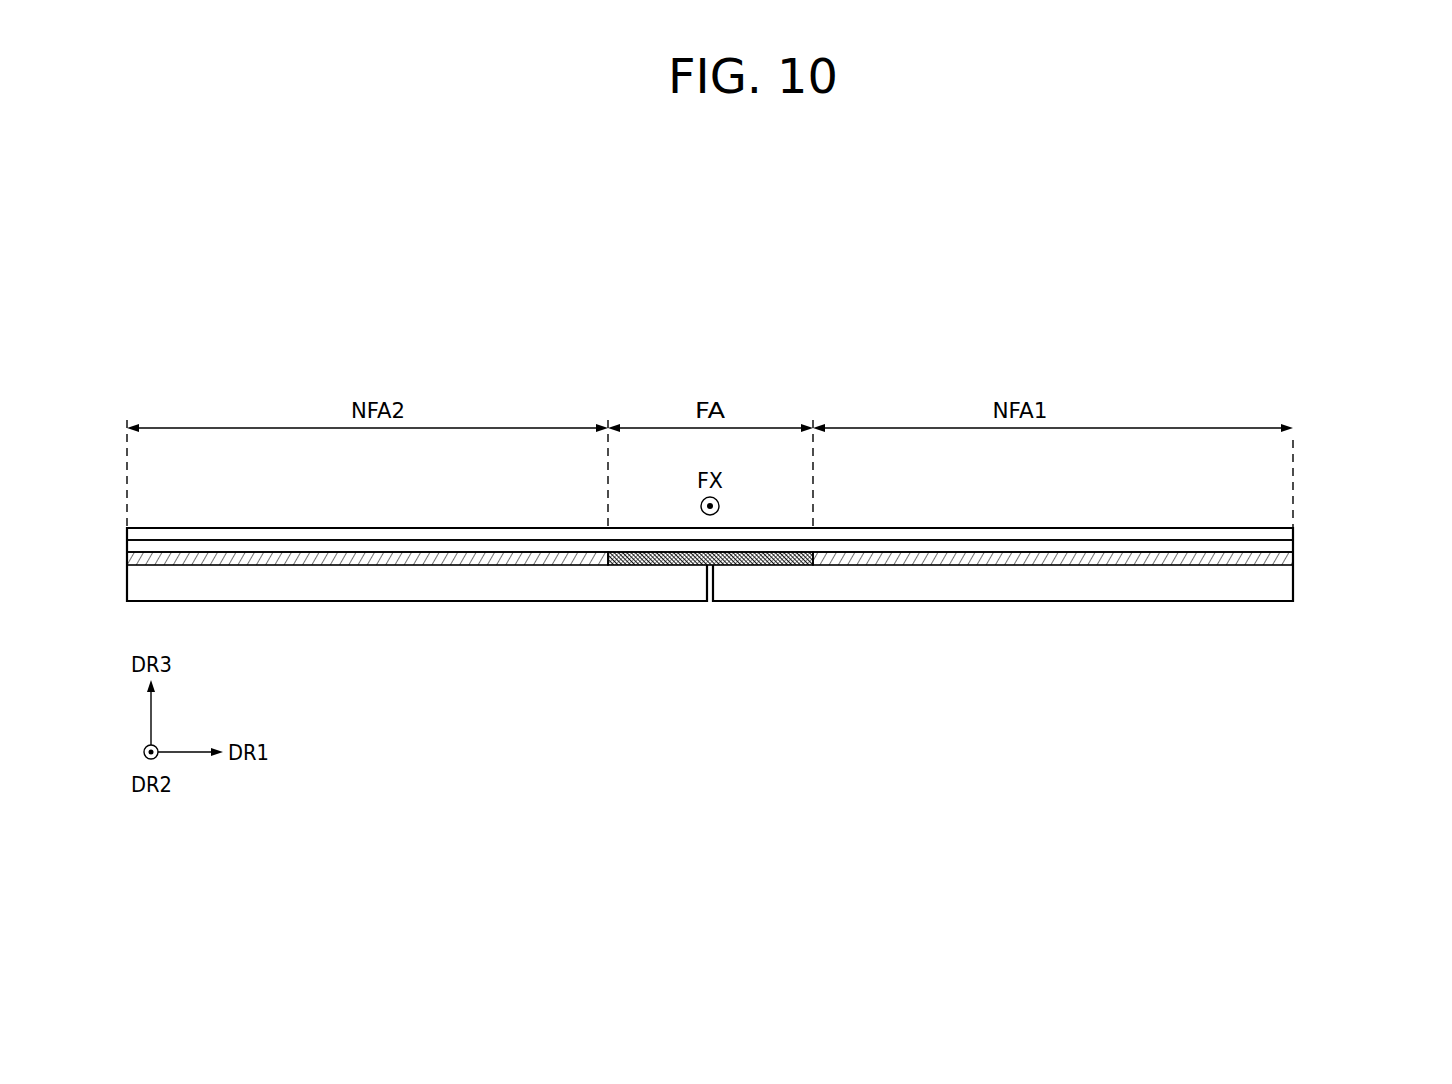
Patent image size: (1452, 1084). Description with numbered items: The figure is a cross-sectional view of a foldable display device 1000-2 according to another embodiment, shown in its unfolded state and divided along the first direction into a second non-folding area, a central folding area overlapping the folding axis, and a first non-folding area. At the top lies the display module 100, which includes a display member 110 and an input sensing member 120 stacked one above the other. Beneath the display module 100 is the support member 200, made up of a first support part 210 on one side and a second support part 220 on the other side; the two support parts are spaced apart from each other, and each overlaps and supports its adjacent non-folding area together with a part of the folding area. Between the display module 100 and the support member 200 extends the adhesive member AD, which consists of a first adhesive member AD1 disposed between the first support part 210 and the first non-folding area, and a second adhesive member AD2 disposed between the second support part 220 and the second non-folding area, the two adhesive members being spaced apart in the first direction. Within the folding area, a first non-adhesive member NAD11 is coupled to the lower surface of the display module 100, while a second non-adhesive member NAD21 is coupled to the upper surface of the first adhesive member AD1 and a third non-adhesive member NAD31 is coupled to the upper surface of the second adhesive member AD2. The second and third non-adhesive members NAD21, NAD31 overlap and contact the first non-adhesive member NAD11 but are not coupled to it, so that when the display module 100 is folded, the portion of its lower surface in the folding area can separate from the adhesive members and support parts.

The display device 1000-2 is at (1243, 373).
The display module 100 is at (1386, 505).
The input sensing member 120 is at (1283, 534).
The display member 110 is at (1283, 546).
The support member 200 is at (762, 673).
The second support part 220 is at (680, 592).
The first support part 210 is at (740, 592).
The adhesive member AD is at (455, 768).
The first adhesive member AD1 is at (860, 562).
The second adhesive member AD2 is at (483, 560).
The first non-adhesive member NAD11 is at (597, 553).
The second non-adhesive member NAD21 is at (790, 565).
The third non-adhesive member NAD31 is at (622, 565).